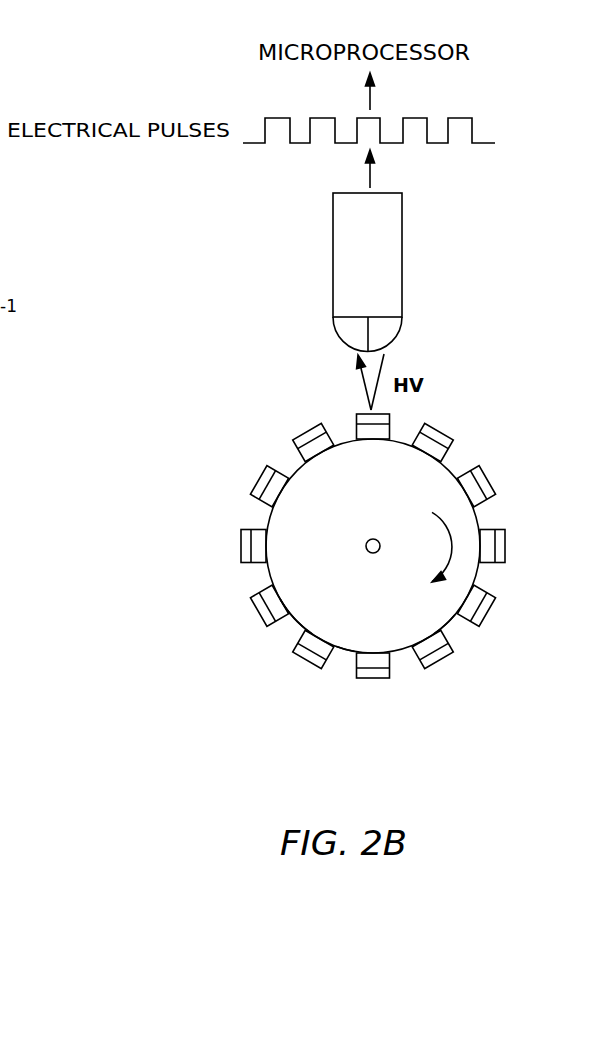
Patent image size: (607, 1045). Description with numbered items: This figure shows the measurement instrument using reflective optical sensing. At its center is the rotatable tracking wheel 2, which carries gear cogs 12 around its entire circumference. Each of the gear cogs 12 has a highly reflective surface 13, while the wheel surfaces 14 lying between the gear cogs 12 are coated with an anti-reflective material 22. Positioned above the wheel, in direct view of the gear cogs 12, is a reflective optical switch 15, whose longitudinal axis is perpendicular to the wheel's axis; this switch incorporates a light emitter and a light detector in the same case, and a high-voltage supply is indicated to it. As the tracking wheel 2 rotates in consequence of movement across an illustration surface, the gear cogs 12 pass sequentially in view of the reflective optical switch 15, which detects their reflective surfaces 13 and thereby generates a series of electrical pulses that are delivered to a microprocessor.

The tracking wheel 2 is at (302, 546).
The gear cogs 12 is at (483, 668).
The highly reflective surfaces 13 is at (376, 696).
The wheel surfaces 14 is at (338, 666).
The reflective optical switch 15 is at (315, 242).
The anti-reflective material 22 is at (281, 627).